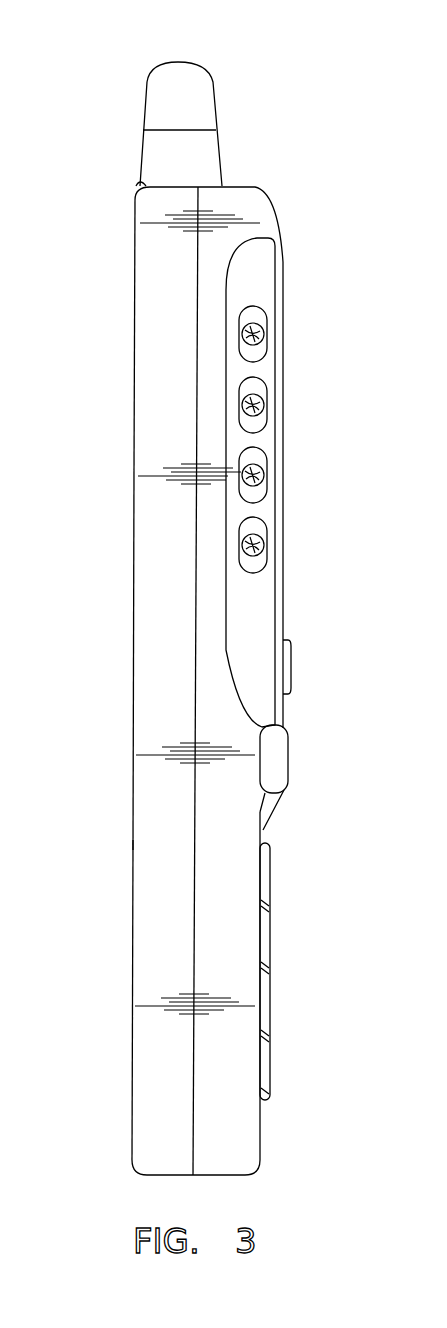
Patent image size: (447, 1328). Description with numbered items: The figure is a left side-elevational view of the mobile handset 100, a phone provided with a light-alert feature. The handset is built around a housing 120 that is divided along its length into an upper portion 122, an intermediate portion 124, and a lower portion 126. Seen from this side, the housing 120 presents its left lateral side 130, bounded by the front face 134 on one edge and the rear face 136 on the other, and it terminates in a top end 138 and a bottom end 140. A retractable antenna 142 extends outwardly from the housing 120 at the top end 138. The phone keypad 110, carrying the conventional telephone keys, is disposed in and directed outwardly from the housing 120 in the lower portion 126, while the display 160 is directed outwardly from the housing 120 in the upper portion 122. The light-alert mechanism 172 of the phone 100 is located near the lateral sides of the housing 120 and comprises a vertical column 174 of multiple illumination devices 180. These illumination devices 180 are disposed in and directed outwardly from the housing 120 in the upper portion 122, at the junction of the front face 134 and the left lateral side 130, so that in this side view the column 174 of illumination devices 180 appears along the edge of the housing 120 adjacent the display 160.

The mobile handset 100 is at (105, 90).
The phone keypad 110 is at (290, 965).
The housing 120 is at (234, 182).
The upper portion 122 is at (120, 375).
The intermediate portion 124 is at (125, 748).
The lower portion 126 is at (128, 1058).
The left lateral side 130 is at (182, 565).
The front face 134 is at (262, 828).
The rear face 136 is at (130, 845).
The top end 138 is at (145, 181).
The bottom end 140 is at (228, 1175).
The retractable antenna 142 is at (207, 70).
The display 160 is at (282, 572).
The light-alert mechanism 172 is at (295, 407).
The vertical column of illumination devices 174 is at (255, 280).
The illumination devices 180 is at (250, 462).